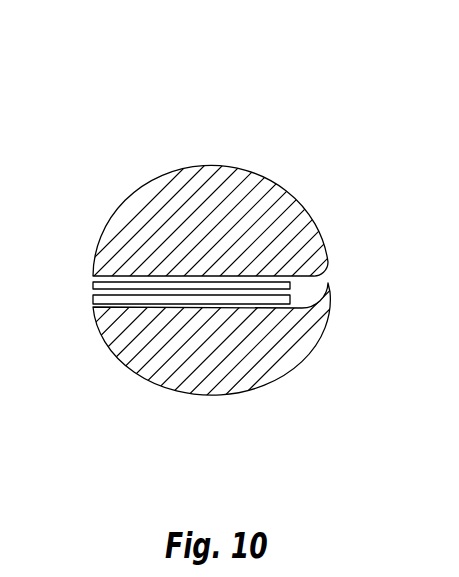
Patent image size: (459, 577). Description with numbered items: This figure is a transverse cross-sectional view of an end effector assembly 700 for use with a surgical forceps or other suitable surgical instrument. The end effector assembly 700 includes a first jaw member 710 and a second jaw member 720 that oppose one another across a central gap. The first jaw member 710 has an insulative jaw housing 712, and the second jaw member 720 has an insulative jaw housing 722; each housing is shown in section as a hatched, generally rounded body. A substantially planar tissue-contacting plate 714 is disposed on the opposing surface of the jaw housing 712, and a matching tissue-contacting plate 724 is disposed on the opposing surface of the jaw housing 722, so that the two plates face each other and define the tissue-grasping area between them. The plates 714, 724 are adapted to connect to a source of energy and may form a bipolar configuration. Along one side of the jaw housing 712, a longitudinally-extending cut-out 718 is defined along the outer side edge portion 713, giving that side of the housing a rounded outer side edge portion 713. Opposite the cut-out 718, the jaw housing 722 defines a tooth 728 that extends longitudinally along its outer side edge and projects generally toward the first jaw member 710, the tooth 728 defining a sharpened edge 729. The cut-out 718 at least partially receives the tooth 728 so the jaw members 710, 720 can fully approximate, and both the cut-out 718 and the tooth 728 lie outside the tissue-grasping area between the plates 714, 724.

The end effector assembly 700 is at (310, 113).
The first jaw member 710 is at (226, 166).
The insulative jaw housing 712 is at (128, 218).
The outer side edge portion 713 is at (318, 263).
The tissue-contacting plate 714 is at (100, 285).
The tissue-contacting plate 724 is at (100, 301).
The cut-out 718 is at (328, 264).
The sharpened edge 729 is at (328, 285).
The tooth 728 is at (322, 307).
The second jaw member 720 is at (295, 407).
The insulative jaw housing 722 is at (162, 378).